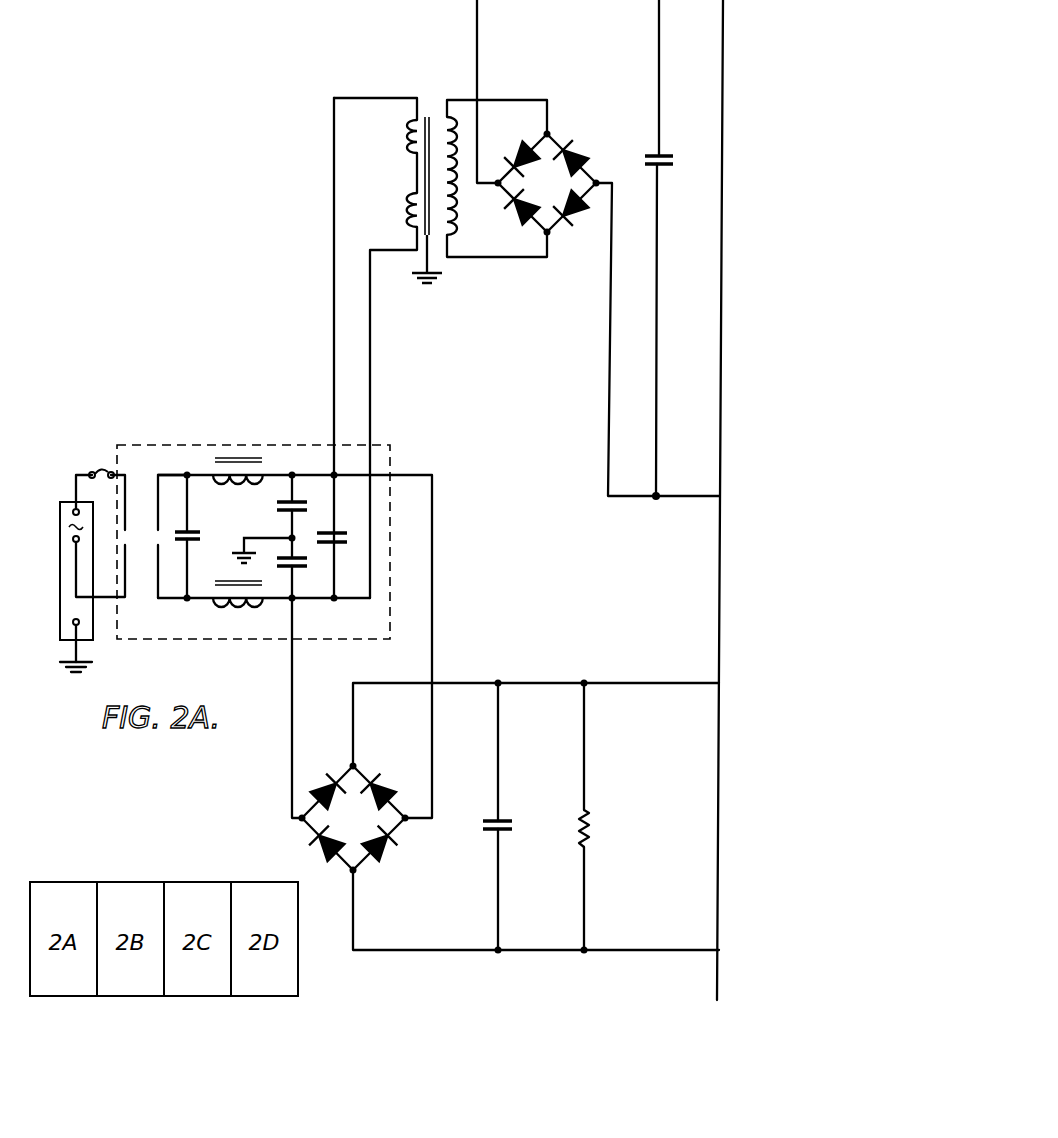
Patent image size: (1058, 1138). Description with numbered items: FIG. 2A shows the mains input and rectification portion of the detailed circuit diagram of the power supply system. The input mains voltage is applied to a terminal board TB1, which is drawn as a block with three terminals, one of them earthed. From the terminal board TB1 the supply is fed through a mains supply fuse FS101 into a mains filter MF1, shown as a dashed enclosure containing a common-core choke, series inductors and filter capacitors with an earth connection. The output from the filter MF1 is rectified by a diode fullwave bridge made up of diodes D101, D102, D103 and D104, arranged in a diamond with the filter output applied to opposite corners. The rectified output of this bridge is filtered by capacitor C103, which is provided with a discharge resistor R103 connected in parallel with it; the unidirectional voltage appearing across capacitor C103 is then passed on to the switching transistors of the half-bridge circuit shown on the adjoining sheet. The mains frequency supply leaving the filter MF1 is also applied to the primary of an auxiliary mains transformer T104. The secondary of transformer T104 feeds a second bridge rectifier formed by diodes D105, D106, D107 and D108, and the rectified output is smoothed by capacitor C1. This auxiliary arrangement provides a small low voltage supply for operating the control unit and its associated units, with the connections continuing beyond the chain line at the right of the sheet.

The auxiliary mains transformer T104 is at (431, 110).
The diode D105 is at (577, 157).
The diode D106 is at (572, 218).
The diode D107 is at (523, 216).
The diode D108 is at (518, 156).
The capacitor C1 is at (667, 153).
The mains filter MF1 is at (283, 445).
The mains supply fuse FS101 is at (103, 470).
The terminal board TB1 is at (93, 623).
The diode D101 is at (390, 785).
The diode D102 is at (388, 853).
The diode D103 is at (320, 860).
The diode D104 is at (325, 782).
The capacitor C103 is at (507, 821).
The discharge resistor R103 is at (597, 825).